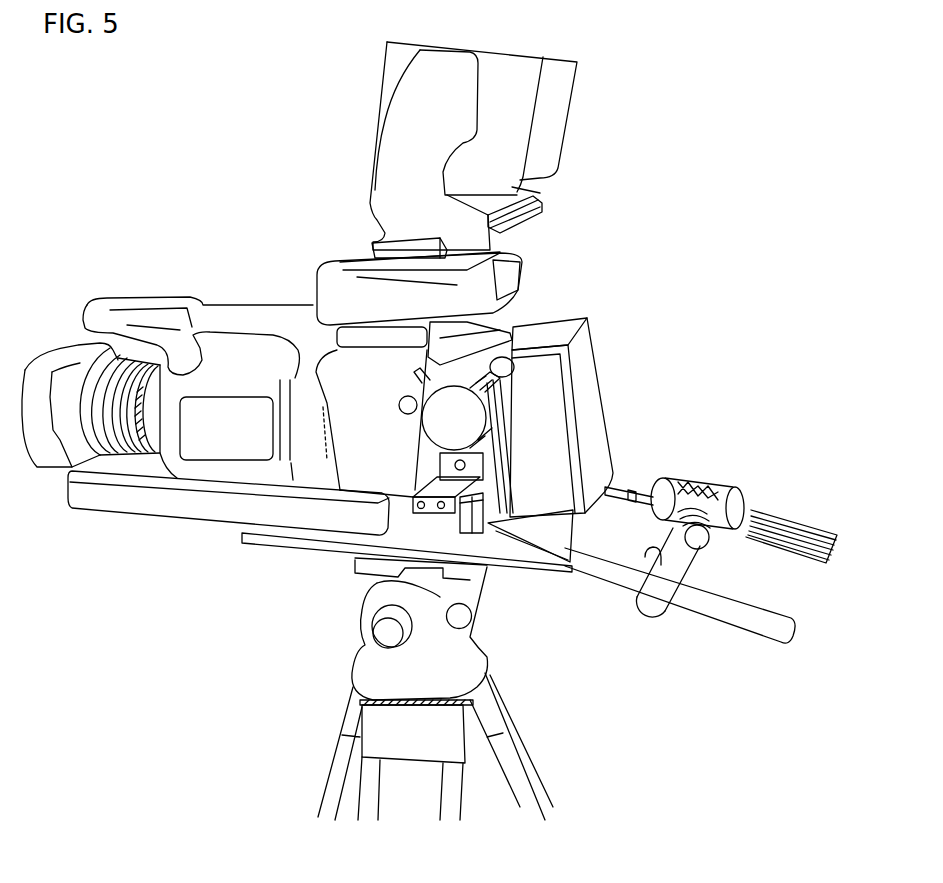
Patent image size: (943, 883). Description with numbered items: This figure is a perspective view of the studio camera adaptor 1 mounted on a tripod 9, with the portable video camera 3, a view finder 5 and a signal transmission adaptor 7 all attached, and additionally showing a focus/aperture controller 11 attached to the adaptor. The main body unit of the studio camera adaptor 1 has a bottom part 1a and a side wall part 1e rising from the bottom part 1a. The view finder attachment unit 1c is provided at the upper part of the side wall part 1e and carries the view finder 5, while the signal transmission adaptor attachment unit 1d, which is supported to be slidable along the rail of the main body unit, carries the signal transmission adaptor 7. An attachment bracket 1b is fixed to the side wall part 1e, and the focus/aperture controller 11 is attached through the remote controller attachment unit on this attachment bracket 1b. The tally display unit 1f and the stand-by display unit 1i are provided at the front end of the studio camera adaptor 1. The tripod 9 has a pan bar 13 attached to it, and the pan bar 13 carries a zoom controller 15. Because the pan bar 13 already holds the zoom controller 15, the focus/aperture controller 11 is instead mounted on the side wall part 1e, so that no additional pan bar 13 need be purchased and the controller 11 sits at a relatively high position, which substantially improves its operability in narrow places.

The studio camera adaptor 1 is at (325, 340).
The bottom part 1a is at (280, 545).
The attachment bracket 1b is at (468, 472).
The view finder attachment unit 1c is at (522, 262).
The signal transmission adaptor attachment unit 1d is at (500, 323).
The side wall part 1e is at (335, 370).
The tally display unit 1f is at (204, 506).
The stand-by display unit 1i is at (73, 497).
The portable video camera 3 is at (128, 265).
The view finder 5 is at (560, 132).
The signal transmission adaptor 7 is at (593, 350).
The tripod 9 is at (470, 640).
The focus/aperture controller 11 is at (468, 418).
The pan bar 13 is at (713, 603).
The zoom controller 15 is at (732, 488).